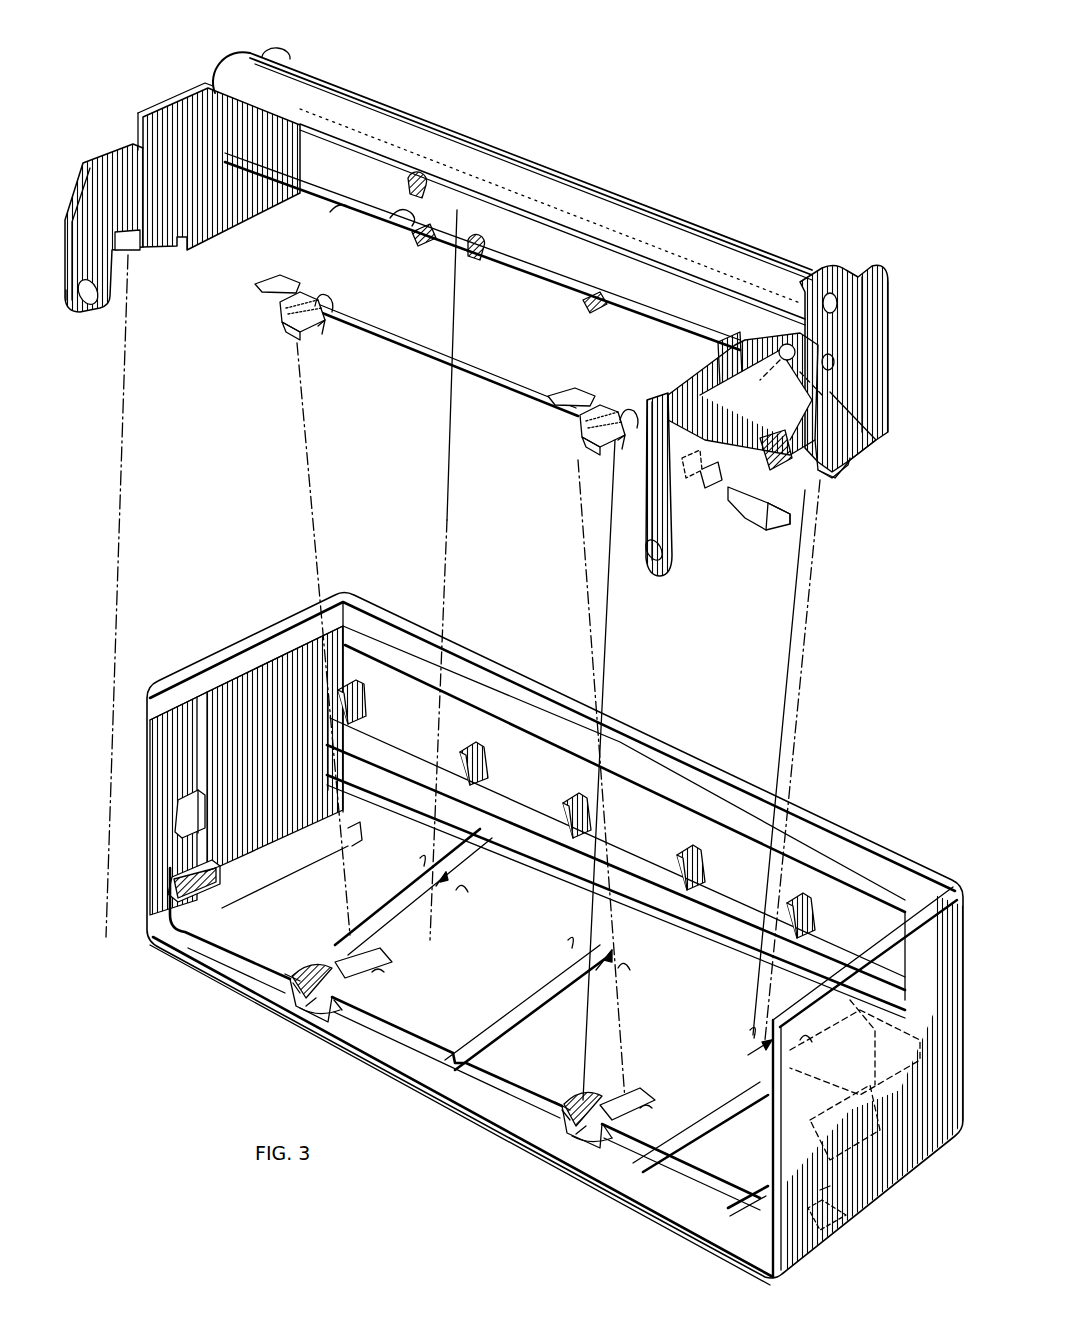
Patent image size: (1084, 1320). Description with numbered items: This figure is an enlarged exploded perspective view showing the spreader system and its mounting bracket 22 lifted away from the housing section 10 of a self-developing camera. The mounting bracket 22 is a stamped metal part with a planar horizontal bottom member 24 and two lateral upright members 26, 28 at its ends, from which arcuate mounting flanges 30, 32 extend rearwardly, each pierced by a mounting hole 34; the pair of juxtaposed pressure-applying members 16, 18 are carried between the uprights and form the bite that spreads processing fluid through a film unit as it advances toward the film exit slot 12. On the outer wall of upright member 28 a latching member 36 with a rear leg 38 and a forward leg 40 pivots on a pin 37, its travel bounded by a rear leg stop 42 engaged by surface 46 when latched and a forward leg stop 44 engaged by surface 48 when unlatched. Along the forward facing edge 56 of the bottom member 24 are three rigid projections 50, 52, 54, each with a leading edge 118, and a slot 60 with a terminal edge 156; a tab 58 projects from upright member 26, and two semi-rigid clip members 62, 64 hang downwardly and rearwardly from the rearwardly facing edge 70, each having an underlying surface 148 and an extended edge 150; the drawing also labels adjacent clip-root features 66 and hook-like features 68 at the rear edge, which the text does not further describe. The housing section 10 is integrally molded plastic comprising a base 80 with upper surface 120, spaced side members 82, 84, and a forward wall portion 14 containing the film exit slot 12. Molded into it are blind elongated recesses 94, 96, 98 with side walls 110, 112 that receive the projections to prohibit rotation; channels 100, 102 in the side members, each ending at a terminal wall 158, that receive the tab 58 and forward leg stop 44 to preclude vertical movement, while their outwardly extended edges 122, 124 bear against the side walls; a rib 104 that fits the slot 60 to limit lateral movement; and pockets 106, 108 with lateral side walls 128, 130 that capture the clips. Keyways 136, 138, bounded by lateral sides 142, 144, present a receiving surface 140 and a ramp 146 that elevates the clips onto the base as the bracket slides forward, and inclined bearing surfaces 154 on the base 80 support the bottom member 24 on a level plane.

The housing section 10 is at (555, 939).
The film exit slot 12 is at (540, 860).
The forward wall portion 14 is at (530, 690).
The pressure-applying member 16 is at (628, 226).
The pressure-applying member 18 is at (532, 264).
The mounting bracket 22 is at (480, 306).
The bottom member 24 is at (529, 282).
The lateral upright member 26 is at (219, 166).
The lateral upright member 28 is at (860, 383).
The arcuate mounting flange 30 is at (68, 290).
The arcuate mounting flange 32 is at (668, 520).
The mounting hole 34 is at (94, 302).
The latching member 36 is at (785, 462).
The pin 37 is at (752, 318).
The rear leg 38 is at (729, 394).
The forward leg 40 is at (850, 452).
The rear leg stop 42 is at (710, 482).
The forward leg stop 44 is at (761, 520).
The surface of rear leg 46 is at (690, 468).
The surface of forward leg 48 is at (832, 472).
The rigid projection 50 is at (422, 188).
The rigid projection 52 is at (592, 300).
The rigid projection 54 is at (786, 360).
The forward facing edge 56 is at (486, 258).
The tab 58 is at (128, 250).
The slot 60 is at (336, 205).
The clip member 62 is at (306, 306).
The clip member 64 is at (606, 418).
The clip tab 66 is at (296, 284).
The hook 68 is at (332, 304).
The rearwardly facing edge 70 is at (447, 379).
The base 80 is at (526, 1044).
The side member 82 is at (198, 695).
The side member 84 is at (868, 1180).
The blind elongated recess 94 is at (440, 884).
The blind elongated recess 96 is at (596, 972).
The blind elongated recess 98 is at (750, 1050).
The channel 100 is at (222, 918).
The channel 102 is at (828, 1228).
The rib 104 is at (358, 832).
The pocket 106 is at (512, 1025).
The pocket 108 is at (626, 1104).
The side wall of recess 110 is at (420, 862).
The side wall of recess 112 is at (462, 894).
The leading edge of projection 118 is at (428, 240).
The upper surface of base 120 is at (500, 1100).
The outwardly extended edge of tab 122 is at (368, 356).
The outwardly extended edge of forward leg stop 124 is at (782, 520).
The lateral side wall of pocket 128 is at (316, 960).
The lateral side wall of pocket 130 is at (384, 974).
The keyway 136 is at (318, 1004).
The keyway 138 is at (590, 1140).
The receiving surface 140 is at (312, 993).
The lateral side of keyway 142 is at (316, 962).
The lateral side of keyway 144 is at (330, 1016).
The ramp 146 is at (338, 1012).
The underlying surface of clip member 148 is at (316, 334).
The extended edge of clip member 150 is at (286, 336).
The inclined bearing surface 154 is at (388, 890).
The terminal edge of slot 156 is at (350, 196).
The terminal wall of channel 158 is at (222, 876).